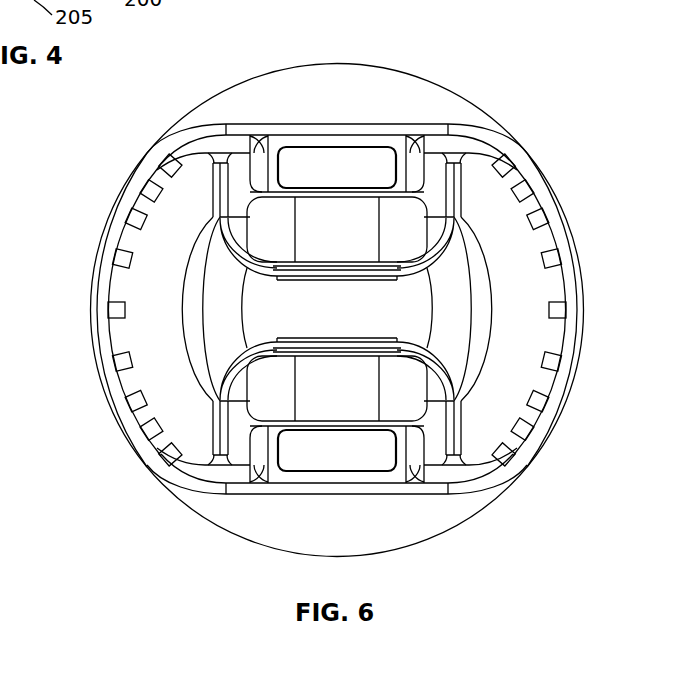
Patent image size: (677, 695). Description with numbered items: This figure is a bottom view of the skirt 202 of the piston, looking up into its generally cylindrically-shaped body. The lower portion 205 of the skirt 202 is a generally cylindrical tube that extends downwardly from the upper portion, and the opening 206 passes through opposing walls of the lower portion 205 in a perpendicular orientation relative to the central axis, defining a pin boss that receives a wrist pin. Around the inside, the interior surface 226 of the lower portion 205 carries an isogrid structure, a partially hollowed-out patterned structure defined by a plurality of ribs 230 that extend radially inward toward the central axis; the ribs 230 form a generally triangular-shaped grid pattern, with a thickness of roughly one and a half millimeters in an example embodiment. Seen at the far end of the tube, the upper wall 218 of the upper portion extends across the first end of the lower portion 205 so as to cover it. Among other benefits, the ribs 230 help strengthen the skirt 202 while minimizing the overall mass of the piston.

The skirt 202 is at (486, 72).
The lower portion 205 is at (514, 330).
The opening 206 is at (329, 223).
The upper wall 218 is at (93, 310).
The interior surface 226 is at (548, 284).
The ribs 230 is at (123, 252).